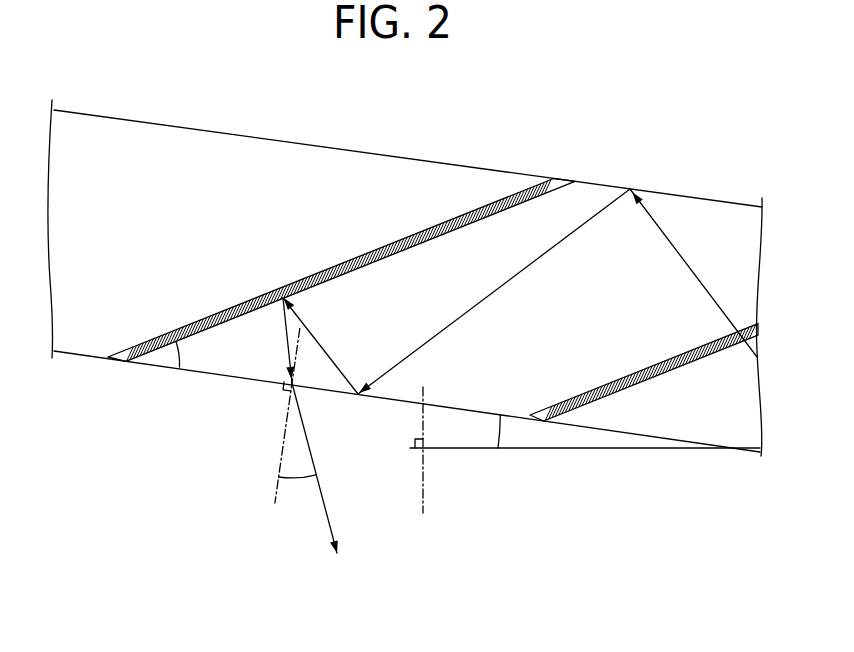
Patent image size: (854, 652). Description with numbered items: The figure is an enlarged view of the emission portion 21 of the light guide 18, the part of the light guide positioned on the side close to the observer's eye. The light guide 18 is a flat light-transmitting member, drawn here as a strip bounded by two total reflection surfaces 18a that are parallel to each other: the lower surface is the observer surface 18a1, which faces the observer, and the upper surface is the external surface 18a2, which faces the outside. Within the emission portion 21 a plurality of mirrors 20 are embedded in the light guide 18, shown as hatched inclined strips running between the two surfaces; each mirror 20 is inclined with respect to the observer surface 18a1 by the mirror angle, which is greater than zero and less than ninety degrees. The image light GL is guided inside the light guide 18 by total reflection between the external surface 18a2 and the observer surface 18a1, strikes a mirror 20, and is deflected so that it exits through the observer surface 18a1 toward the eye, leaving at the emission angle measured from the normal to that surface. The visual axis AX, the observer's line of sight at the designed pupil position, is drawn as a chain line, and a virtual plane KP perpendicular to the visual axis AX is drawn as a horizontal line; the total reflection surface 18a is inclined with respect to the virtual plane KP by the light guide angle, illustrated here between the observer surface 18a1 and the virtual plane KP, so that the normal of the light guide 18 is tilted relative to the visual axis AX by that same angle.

The emission portion 21 is at (146, 104).
The light guide 18 is at (205, 143).
The total reflection surface 18a is at (408, 313).
The observer surface 18a1 is at (580, 427).
The external surface 18a2 is at (578, 182).
The mirror 20 is at (368, 243).
The image light GL is at (655, 223).
The visual axis AX is at (426, 493).
The virtual plane KP is at (508, 450).